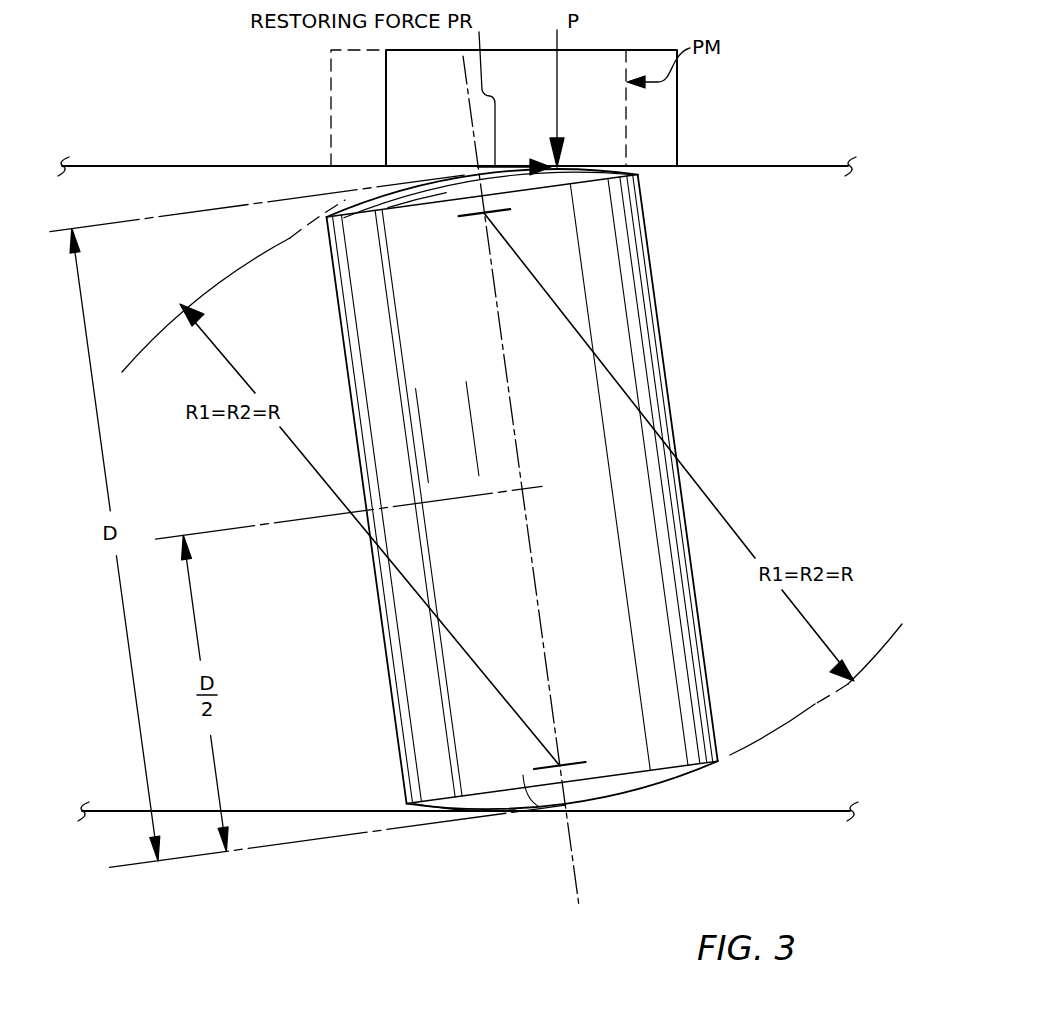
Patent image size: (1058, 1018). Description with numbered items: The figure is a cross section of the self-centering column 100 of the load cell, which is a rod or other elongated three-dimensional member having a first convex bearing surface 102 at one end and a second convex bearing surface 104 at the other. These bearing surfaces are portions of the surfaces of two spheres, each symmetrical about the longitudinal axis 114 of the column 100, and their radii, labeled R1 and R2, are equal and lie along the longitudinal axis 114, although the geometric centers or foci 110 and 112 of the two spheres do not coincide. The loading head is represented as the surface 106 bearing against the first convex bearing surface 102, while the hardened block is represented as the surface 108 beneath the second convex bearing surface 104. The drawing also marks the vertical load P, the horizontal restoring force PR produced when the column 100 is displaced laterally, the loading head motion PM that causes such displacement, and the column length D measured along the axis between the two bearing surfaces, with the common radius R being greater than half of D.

The column 100 is at (612, 332).
The first convex bearing surface 102 is at (353, 205).
The second convex bearing surface 104 is at (662, 788).
The surface 106 is at (778, 166).
The hardened block 108 is at (368, 812).
The geometric center 110 is at (561, 767).
The geometric center 112 is at (483, 214).
The longitudinal axis 114 is at (567, 832).